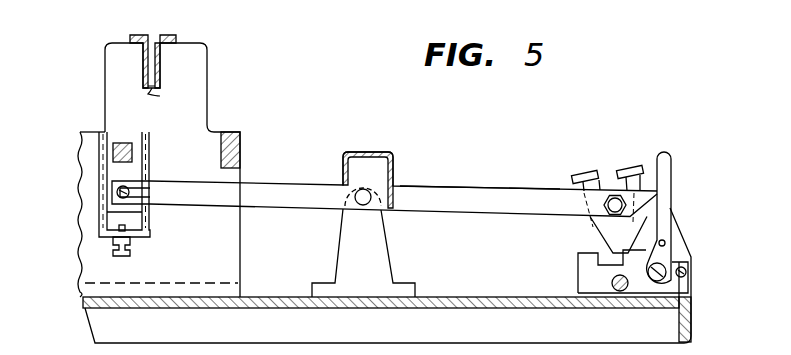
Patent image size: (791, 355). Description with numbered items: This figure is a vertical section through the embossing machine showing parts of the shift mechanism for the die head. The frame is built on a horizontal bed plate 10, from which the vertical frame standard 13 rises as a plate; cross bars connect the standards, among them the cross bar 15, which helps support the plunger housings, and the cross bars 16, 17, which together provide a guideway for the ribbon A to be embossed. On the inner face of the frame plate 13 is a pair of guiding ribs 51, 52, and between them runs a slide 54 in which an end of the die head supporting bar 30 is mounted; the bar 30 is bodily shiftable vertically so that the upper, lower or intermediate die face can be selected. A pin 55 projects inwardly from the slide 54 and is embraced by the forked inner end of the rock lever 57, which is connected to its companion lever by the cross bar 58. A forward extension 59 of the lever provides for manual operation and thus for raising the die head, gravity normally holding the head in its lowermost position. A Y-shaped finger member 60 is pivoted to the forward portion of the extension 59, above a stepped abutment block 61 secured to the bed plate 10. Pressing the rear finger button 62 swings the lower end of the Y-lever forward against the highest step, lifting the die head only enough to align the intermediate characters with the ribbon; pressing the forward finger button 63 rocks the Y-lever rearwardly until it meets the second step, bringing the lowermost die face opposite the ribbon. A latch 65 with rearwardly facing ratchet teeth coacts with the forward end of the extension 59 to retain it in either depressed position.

The bed plate 10 is at (432, 309).
The frame standard 13 is at (197, 79).
The cross bar 15 is at (241, 150).
The cross bar 16 is at (143, 36).
The cross bar 17 is at (166, 36).
The ribbon A is at (161, 99).
The supporting bar 30 is at (118, 142).
The guiding rib 51 is at (100, 215).
The guiding rib 52 is at (148, 225).
The slide 54 is at (130, 170).
The pin 55 is at (128, 190).
The rock lever 57 is at (300, 193).
The cross bar 58 is at (378, 151).
The forward extension 59 is at (470, 186).
The Y-shaped finger member 60 is at (608, 230).
The stepped abutment block 61 is at (590, 270).
The finger button 62 is at (588, 172).
The finger button 63 is at (633, 169).
The latch 65 is at (672, 185).